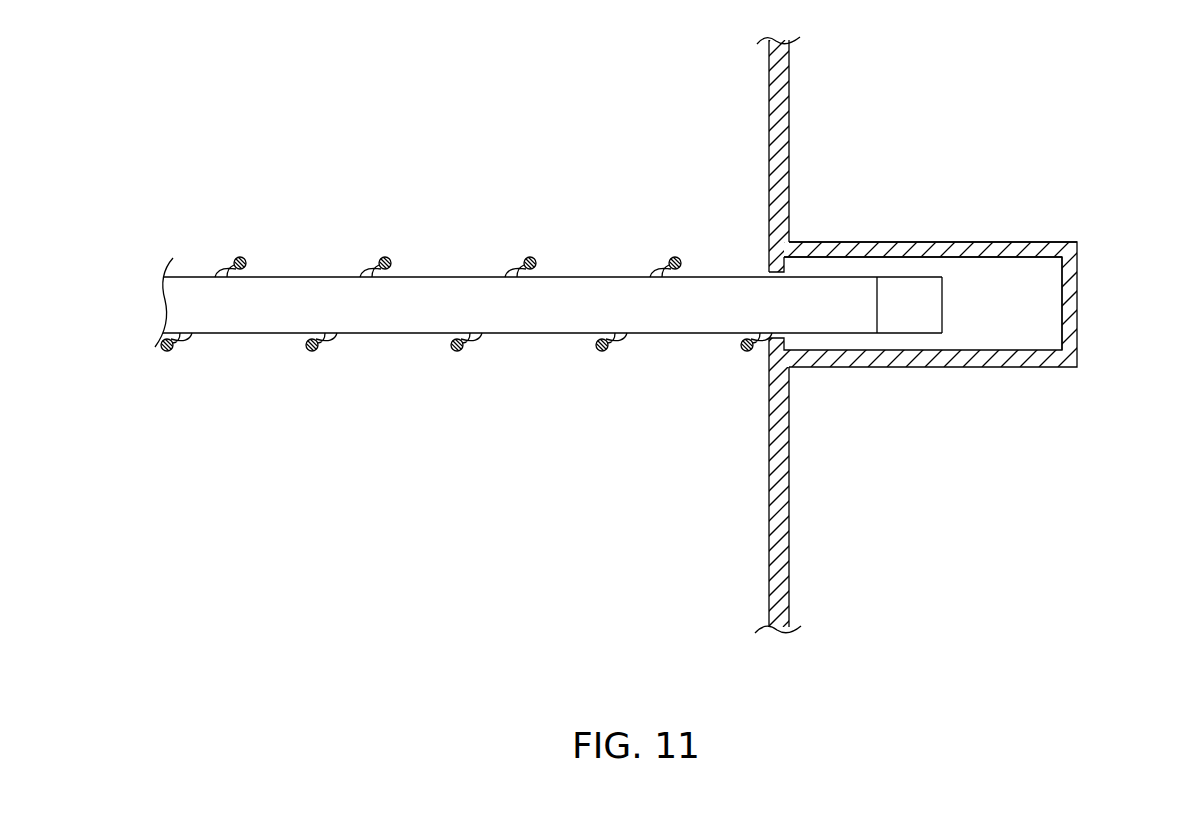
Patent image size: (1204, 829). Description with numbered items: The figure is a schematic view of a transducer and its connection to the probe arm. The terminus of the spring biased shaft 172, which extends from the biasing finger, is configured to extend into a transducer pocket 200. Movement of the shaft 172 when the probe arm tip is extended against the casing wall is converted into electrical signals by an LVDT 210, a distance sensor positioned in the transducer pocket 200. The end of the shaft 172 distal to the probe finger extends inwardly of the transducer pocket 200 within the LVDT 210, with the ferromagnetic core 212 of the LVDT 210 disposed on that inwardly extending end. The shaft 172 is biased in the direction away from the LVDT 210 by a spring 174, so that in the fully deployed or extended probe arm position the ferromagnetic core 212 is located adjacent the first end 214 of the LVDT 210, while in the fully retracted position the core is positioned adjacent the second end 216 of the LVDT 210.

The spring biased shaft 172 is at (395, 313).
The spring 174 is at (607, 351).
The transducer pocket 200 is at (992, 153).
The LVDT 210 is at (899, 383).
The ferromagnetic core 212 is at (921, 306).
The first end 214 is at (850, 267).
The second end 216 is at (1042, 325).